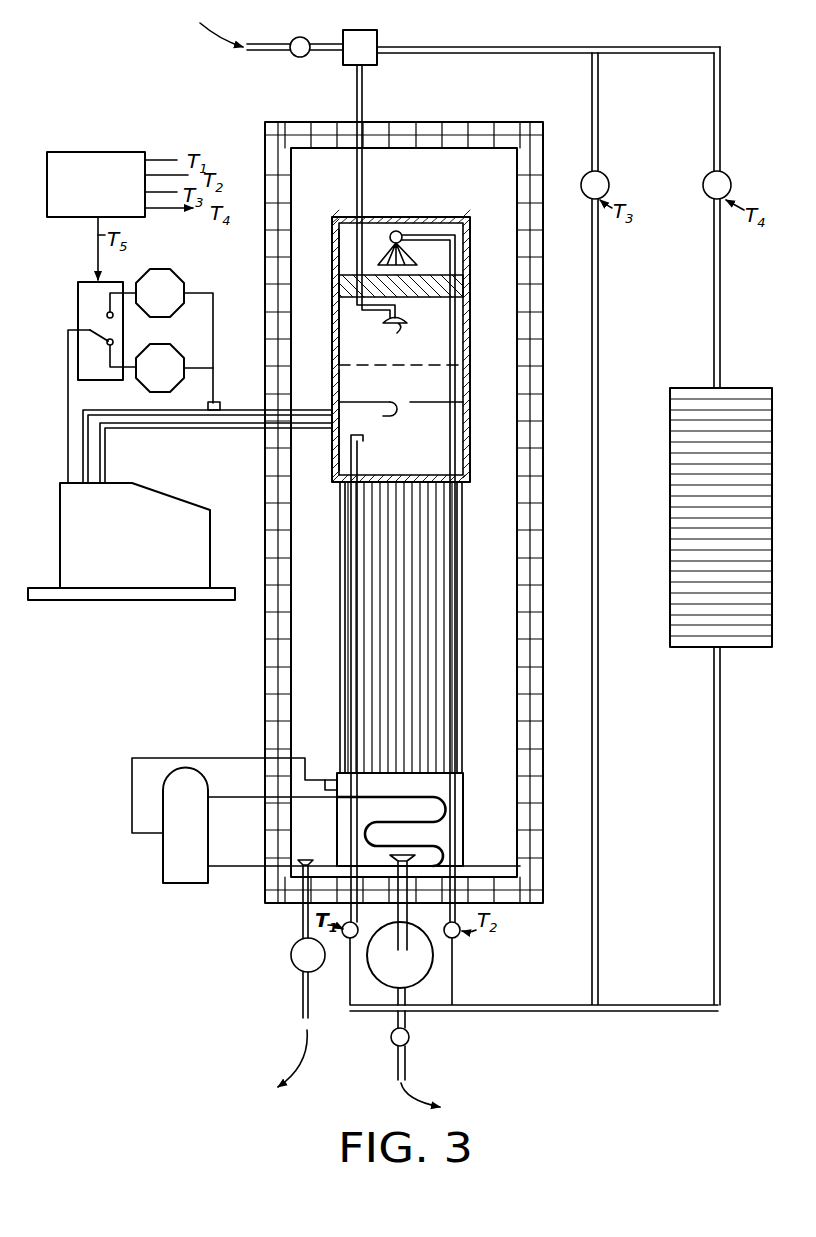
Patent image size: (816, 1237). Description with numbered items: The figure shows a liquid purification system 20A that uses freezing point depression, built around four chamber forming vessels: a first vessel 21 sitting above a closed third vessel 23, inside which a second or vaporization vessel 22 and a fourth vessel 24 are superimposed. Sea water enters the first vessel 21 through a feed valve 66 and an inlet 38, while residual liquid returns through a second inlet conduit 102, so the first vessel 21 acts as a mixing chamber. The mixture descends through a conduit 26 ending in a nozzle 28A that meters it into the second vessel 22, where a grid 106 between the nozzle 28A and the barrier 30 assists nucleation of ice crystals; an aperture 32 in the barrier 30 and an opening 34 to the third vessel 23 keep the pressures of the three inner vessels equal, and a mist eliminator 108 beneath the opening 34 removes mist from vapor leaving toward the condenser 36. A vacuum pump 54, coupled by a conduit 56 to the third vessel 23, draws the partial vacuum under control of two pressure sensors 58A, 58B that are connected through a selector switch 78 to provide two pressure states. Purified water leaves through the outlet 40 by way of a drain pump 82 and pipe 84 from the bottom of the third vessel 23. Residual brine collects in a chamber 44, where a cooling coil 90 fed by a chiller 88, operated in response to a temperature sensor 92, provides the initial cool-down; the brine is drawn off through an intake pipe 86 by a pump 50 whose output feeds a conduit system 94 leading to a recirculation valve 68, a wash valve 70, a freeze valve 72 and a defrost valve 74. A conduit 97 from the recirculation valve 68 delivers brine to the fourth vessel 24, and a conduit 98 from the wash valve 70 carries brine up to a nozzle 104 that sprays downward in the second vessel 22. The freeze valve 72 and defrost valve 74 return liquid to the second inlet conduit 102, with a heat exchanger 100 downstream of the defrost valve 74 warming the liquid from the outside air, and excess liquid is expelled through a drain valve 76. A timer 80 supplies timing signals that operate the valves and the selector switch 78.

The system for liquid purification 20A is at (270, 1023).
The first vessel 21 is at (360, 35).
The second or vaporization vessel 22 is at (345, 353).
The third vessel 23 is at (310, 603).
The fourth vessel 24 is at (347, 421).
The conduit 26 is at (357, 88).
The nozzle 28A is at (377, 336).
The barrier 30 is at (348, 402).
The orifice or aperture 32 is at (395, 408).
The opening 34 is at (350, 217).
The condenser 36 is at (343, 640).
The inlet 38 is at (325, 44).
The outlet 40 is at (305, 1005).
The chamber 44 is at (463, 812).
The pump 50 is at (420, 968).
The vacuum pump 54 is at (70, 532).
The conduit 56 is at (147, 428).
The pressure sensor 58A is at (172, 357).
The pressure sensor 58B is at (172, 283).
The feed valve 66 is at (303, 40).
The recirculation valve 68 is at (348, 943).
The wash valve 70 is at (455, 935).
The freeze valve 72 is at (600, 176).
The defrost valve 74 is at (722, 176).
The drain valve 76 is at (409, 1037).
The selector switch 78 is at (90, 290).
The timer 80 is at (87, 157).
The drain pump 82 is at (298, 962).
The pipe 84 is at (305, 918).
The intake pipe 86 is at (455, 857).
The chiller 88 is at (163, 855).
The cooling coil 90 is at (445, 800).
The temperature sensor 92 is at (327, 783).
The conduit system 94 is at (617, 1013).
The conduit 97 is at (360, 440).
The conduit 98 is at (432, 240).
The heat exchanger 100 is at (743, 393).
The second inlet conduit 102 is at (490, 47).
The nozzle 104 is at (400, 231).
The grid 106 is at (432, 365).
The mist eliminator 108 is at (440, 293).